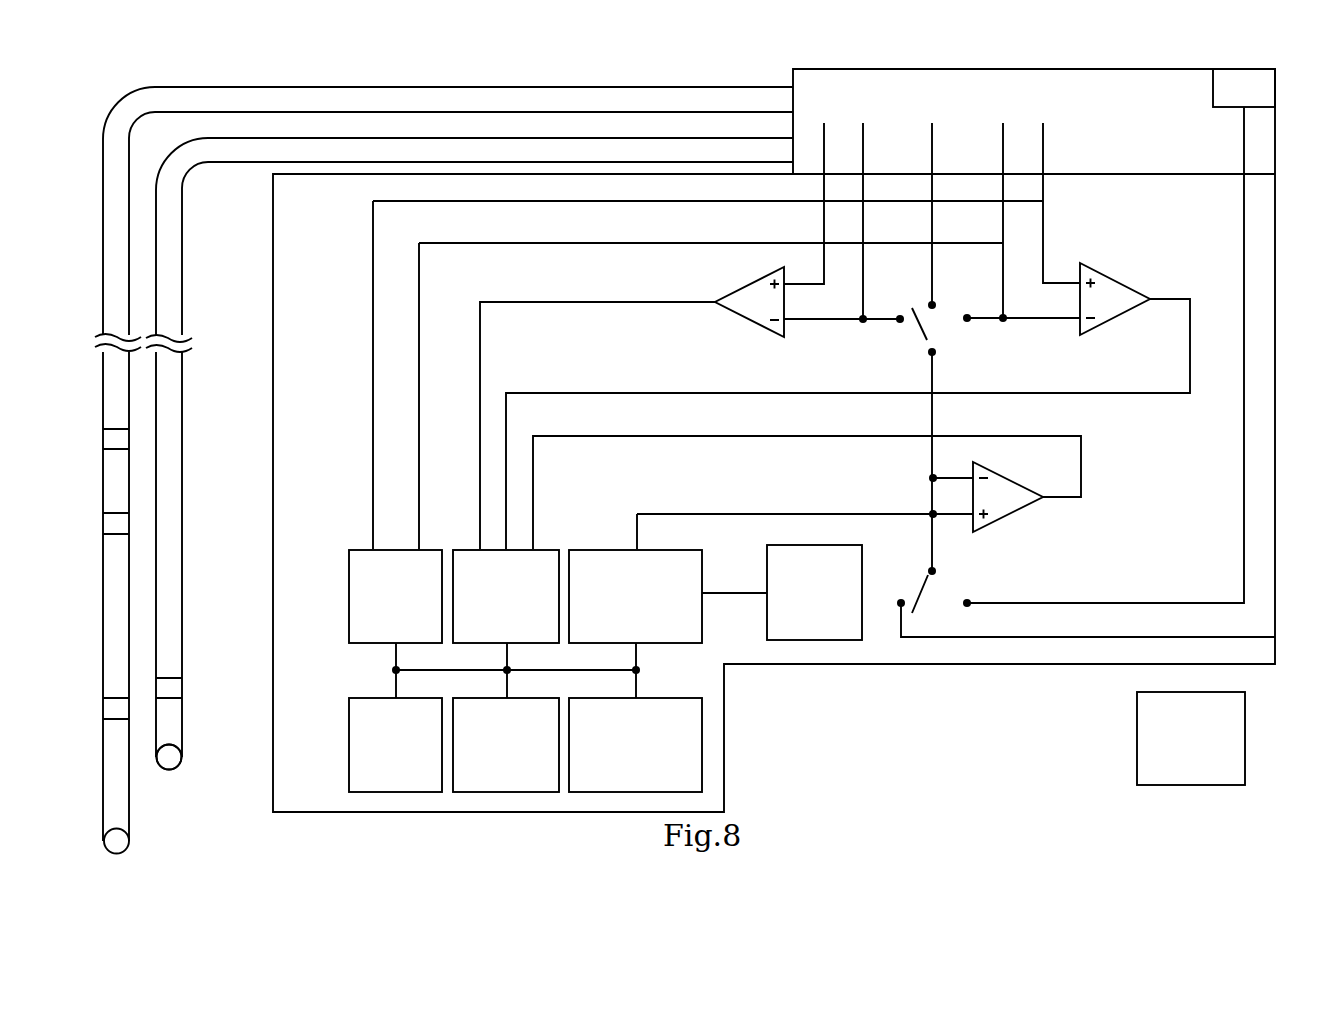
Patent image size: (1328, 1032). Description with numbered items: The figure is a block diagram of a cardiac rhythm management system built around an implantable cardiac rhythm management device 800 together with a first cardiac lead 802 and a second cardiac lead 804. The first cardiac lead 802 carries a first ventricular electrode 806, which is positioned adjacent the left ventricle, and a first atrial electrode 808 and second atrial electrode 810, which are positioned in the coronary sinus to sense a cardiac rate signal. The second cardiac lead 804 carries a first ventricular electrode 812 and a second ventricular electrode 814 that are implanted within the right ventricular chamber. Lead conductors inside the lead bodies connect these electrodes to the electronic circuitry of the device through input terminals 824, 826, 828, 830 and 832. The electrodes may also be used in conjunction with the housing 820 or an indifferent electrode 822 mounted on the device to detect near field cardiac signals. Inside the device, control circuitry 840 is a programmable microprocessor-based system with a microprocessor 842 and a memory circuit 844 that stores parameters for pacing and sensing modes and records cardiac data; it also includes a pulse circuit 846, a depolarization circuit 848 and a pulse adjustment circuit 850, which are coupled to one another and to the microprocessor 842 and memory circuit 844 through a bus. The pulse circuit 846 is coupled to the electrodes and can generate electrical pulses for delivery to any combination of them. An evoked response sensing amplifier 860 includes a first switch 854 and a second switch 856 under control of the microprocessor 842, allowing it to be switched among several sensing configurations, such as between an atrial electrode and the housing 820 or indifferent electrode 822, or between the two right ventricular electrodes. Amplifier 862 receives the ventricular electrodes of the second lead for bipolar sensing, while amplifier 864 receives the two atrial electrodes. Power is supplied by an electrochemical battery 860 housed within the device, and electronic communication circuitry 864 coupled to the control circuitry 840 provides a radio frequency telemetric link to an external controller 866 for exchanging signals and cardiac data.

The implantable cardiac rhythm management device 800 is at (1060, 780).
The first cardiac lead 802 is at (475, 87).
The second cardiac lead 804 is at (500, 137).
The first ventricular electrode 806 is at (115, 699).
The first atrial electrode 808 is at (124, 438).
The second atrial electrode 810 is at (124, 522).
The first ventricular electrode 812 is at (178, 766).
The second ventricular electrode 814 is at (176, 689).
The housing 820 is at (1276, 398).
The indifferent electrode 822 is at (1210, 88).
The input terminal 824 is at (824, 125).
The input terminal 826 is at (863, 125).
The input terminal 828 is at (932, 125).
The input terminal 830 is at (1003, 125).
The input terminal 832 is at (1043, 125).
The control circuitry 840 is at (346, 247).
The microprocessor 842 is at (588, 542).
The memory circuit 844 is at (820, 545).
The pulse circuit 846 is at (394, 548).
The depolarization circuit 848 is at (542, 542).
The pulse adjustment circuit 850 is at (518, 698).
The first switch 854 is at (922, 338).
The second switch 856 is at (922, 582).
The evoked response sensing amplifier 860 is at (1003, 474).
The amplifier 862 is at (758, 274).
The amplifier 864 is at (1110, 279).
The external controller 866 is at (1205, 692).